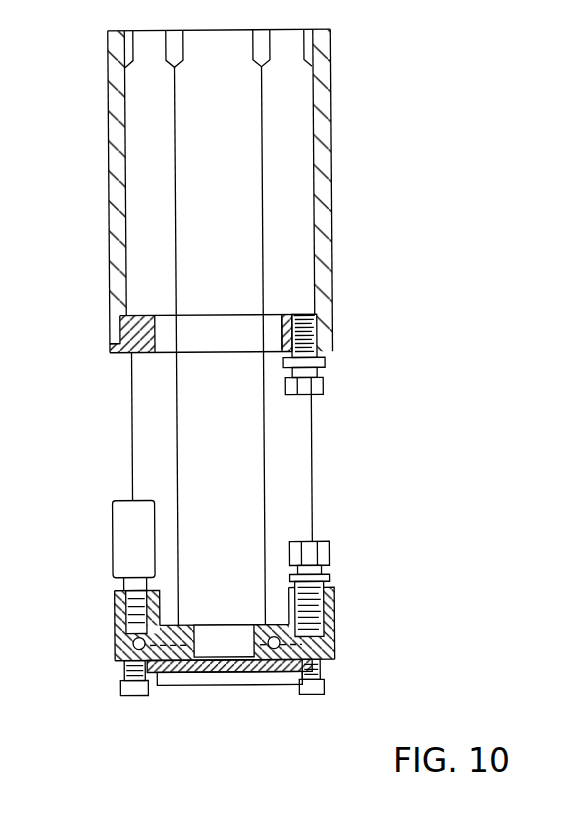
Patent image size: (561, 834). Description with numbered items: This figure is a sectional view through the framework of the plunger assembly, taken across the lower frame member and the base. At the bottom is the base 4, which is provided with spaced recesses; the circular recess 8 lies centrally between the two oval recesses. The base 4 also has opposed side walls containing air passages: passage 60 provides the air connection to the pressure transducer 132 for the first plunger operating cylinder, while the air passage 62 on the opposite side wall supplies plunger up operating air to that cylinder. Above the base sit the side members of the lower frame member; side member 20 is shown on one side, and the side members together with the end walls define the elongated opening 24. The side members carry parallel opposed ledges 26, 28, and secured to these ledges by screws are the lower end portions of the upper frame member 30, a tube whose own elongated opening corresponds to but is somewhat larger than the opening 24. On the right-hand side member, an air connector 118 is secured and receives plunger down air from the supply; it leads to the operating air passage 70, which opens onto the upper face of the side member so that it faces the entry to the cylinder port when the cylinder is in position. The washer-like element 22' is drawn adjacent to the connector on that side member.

The upper frame member 30 is at (322, 141).
The side member 20 is at (126, 352).
The ledge 26 is at (118, 338).
The elongated opening 24 is at (285, 332).
The ledge 28 is at (318, 330).
The operating air passage 70 is at (305, 318).
The washer 22' is at (356, 348).
The air connector 118 is at (313, 373).
The air passage 62 is at (300, 640).
The transducer 132 is at (125, 528).
The passage 60 is at (134, 610).
The base 4 is at (118, 658).
The recess 8 is at (262, 640).